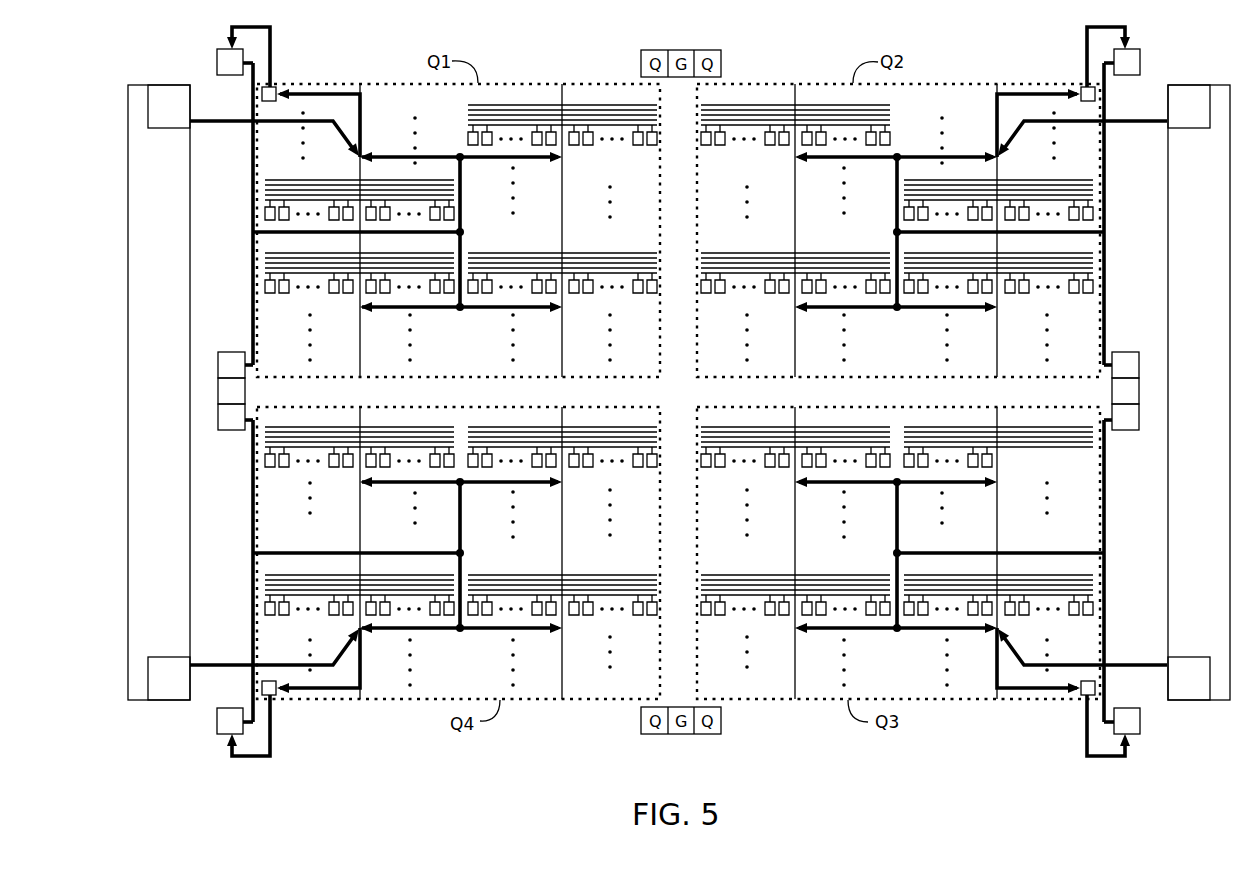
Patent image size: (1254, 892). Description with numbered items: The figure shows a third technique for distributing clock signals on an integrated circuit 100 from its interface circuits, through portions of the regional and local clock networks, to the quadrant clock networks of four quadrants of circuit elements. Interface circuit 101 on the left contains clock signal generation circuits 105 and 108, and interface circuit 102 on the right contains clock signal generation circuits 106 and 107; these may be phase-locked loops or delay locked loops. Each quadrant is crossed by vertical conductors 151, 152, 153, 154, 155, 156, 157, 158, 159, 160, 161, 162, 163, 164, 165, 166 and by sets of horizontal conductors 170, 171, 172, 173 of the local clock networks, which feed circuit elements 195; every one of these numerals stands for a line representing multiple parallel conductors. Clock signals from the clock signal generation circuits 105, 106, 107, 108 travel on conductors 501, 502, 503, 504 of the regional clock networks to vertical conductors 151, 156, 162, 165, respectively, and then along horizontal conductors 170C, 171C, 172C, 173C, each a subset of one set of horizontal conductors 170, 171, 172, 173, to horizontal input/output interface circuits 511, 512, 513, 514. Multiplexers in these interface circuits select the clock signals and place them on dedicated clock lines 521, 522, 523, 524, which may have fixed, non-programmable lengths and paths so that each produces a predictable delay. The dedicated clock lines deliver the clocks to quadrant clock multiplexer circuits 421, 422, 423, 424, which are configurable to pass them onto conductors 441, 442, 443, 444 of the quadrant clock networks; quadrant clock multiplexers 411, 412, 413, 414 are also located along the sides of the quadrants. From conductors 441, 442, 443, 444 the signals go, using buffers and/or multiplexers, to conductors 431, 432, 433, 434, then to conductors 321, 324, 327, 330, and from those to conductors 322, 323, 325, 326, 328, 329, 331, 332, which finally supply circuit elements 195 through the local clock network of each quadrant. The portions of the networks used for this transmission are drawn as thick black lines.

The integrated circuit 100 is at (537, 52).
The interface circuit 101 is at (190, 247).
The interface circuit 102 is at (1167, 247).
The clock signal generation circuit 105 is at (163, 87).
The clock signal generation circuit 106 is at (1196, 87).
The clock signal generation circuit 107 is at (1187, 697).
The clock signal generation circuit 108 is at (163, 699).
The vertical conductors 151 is at (362, 124).
The vertical conductors 152 is at (565, 102).
The vertical conductors 153 is at (363, 330).
The vertical conductors 154 is at (560, 330).
The vertical conductors 155 is at (795, 176).
The vertical conductors 156 is at (996, 136).
The vertical conductors 157 is at (797, 330).
The vertical conductors 158 is at (997, 322).
The vertical conductors 159 is at (796, 505).
The vertical conductors 160 is at (998, 503).
The vertical conductors 161 is at (799, 656).
The vertical conductors 162 is at (997, 652).
The vertical conductors 163 is at (360, 502).
The vertical conductors 164 is at (560, 513).
The vertical conductors 165 is at (360, 653).
The vertical conductors 166 is at (561, 646).
The horizontal conductors 170 is at (300, 180).
The horizontal conductors 171 is at (747, 105).
The horizontal conductors 172 is at (740, 452).
The horizontal conductors 173 is at (300, 427).
The horizontal conductors 170C is at (337, 92).
The horizontal conductors 171C is at (1020, 91).
The horizontal conductors 172C is at (1023, 692).
The horizontal conductors 173C is at (331, 692).
The circuit elements 195 is at (572, 148).
The conductors 321 is at (462, 180).
The conductors 322 is at (522, 162).
The conductors 323 is at (448, 310).
The conductors 324 is at (895, 178).
The conductors 325 is at (818, 160).
The conductors 326 is at (872, 310).
The conductors 327 is at (900, 500).
The conductors 328 is at (830, 482).
The conductors 329 is at (880, 634).
The conductors 330 is at (461, 502).
The conductors 331 is at (418, 486).
The conductors 332 is at (446, 630).
The quadrant clock multiplexer 411 is at (232, 351).
The quadrant clock multiplexer 412 is at (231, 433).
The quadrant clock multiplexer 413 is at (1125, 351).
The quadrant clock multiplexer 414 is at (1126, 432).
The quadrant clock multiplexer circuit 421 is at (228, 44).
The quadrant clock multiplexer circuit 422 is at (1129, 44).
The quadrant clock multiplexer circuit 423 is at (1131, 738).
The quadrant clock multiplexer circuit 424 is at (224, 738).
The conductors 431 is at (375, 234).
The conductors 432 is at (928, 234).
The conductors 433 is at (1070, 551).
The conductors 434 is at (328, 552).
The conductors 441 is at (251, 190).
The conductors 442 is at (1106, 190).
The conductors 443 is at (1105, 563).
The conductors 444 is at (252, 563).
The conductors 501 is at (213, 123).
The conductors 502 is at (1128, 124).
The conductors 503 is at (1126, 661).
The conductors 504 is at (212, 663).
The horizontal input/output interface circuit 511 is at (277, 88).
The horizontal input/output interface circuit 512 is at (1081, 88).
The horizontal input/output interface circuit 513 is at (1083, 698).
The horizontal input/output interface circuit 514 is at (275, 698).
The dedicated clock line 521 is at (273, 48).
The dedicated clock line 522 is at (1085, 48).
The dedicated clock line 523 is at (1085, 740).
The dedicated clock line 524 is at (271, 740).